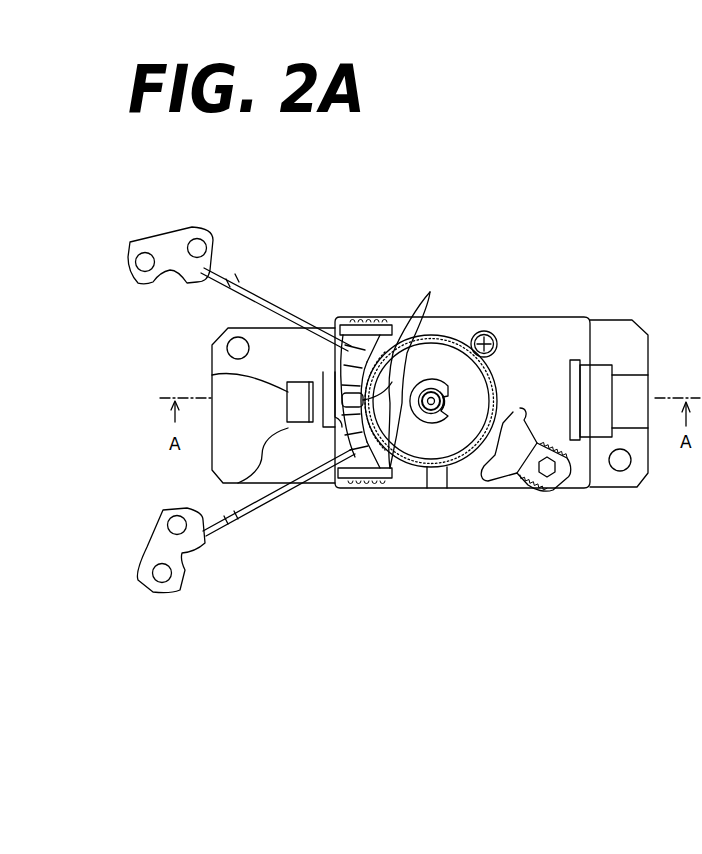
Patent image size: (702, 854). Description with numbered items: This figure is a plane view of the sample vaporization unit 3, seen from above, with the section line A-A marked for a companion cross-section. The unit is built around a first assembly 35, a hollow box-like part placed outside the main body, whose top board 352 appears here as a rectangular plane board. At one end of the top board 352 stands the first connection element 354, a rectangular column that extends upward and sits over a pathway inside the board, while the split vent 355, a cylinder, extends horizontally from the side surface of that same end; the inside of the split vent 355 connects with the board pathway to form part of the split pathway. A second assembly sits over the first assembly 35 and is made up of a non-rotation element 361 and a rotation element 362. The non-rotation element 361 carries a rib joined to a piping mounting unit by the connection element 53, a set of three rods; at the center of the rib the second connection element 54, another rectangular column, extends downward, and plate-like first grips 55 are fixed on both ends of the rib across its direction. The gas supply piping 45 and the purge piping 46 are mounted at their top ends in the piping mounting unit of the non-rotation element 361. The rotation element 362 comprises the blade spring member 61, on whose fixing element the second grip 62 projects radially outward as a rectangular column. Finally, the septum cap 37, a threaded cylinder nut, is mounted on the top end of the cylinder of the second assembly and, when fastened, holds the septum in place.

The sample vaporization unit 3 is at (561, 262).
The first assembly 35 is at (508, 315).
The top board 352 is at (578, 318).
The first connection element 354 is at (232, 478).
The split vent 355 is at (297, 400).
The non-rotation element 361 is at (346, 316).
The rotation element 362 is at (446, 480).
The septum cap 37 is at (443, 352).
The gas supply piping 45 is at (275, 493).
The purge piping 46 is at (252, 300).
The connection element 53 is at (432, 295).
The second connection element 54 is at (318, 330).
The first grip 55 is at (365, 318).
The blade spring member 61 is at (430, 470).
The second grip 62 is at (506, 484).